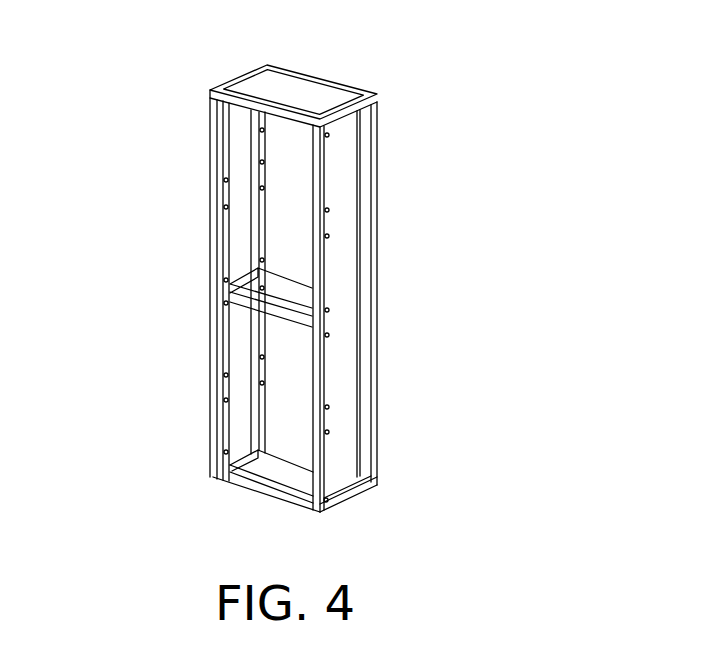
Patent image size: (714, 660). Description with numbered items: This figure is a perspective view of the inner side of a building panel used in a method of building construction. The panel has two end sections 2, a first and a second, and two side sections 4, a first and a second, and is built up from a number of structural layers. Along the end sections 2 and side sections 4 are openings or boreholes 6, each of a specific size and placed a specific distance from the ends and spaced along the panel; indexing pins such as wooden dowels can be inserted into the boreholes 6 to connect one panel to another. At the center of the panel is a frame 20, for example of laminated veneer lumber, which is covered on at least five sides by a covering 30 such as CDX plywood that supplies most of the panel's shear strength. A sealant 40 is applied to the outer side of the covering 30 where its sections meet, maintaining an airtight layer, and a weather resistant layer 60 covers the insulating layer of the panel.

The end section 2 is at (296, 99).
The side section 4 is at (237, 123).
The borehole 6 is at (262, 75).
The frame 20 is at (313, 425).
The covering 30 is at (337, 460).
The sealant 40 is at (362, 439).
The weather resistant layer 60 is at (372, 270).